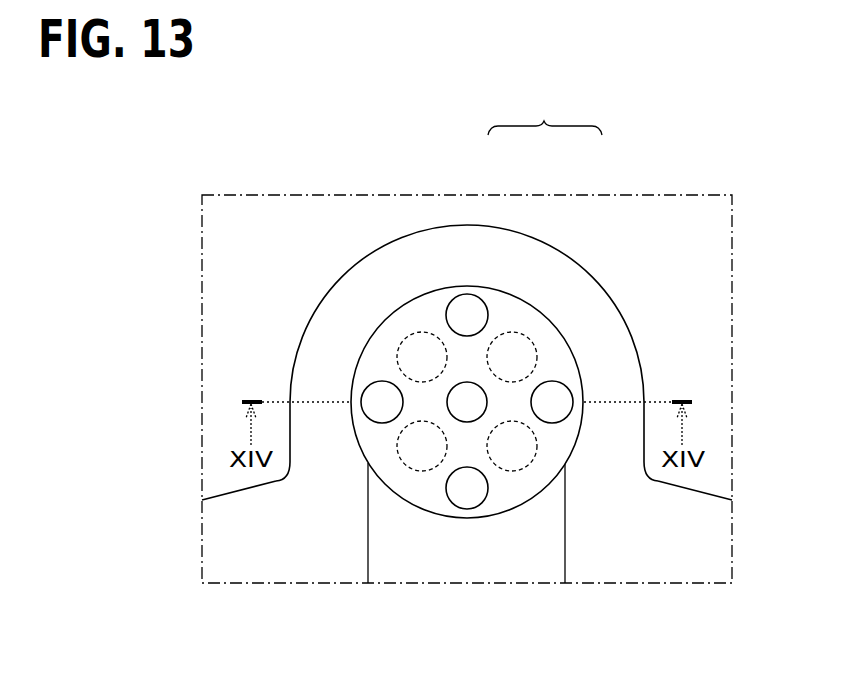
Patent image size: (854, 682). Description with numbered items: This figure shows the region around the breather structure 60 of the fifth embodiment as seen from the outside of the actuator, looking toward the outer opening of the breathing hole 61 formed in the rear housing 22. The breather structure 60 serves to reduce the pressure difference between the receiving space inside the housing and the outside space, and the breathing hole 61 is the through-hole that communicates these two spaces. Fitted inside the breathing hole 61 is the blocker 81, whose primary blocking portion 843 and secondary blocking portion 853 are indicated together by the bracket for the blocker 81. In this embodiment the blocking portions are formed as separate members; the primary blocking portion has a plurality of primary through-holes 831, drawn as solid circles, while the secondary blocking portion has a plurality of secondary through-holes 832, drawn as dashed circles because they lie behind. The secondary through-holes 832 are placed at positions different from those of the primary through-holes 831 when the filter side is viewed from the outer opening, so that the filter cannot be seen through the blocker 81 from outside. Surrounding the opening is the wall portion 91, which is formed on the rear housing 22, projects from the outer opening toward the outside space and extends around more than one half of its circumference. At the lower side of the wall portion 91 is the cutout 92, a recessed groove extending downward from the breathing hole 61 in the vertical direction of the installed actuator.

The rear housing 22 is at (283, 281).
The breather structure 60 is at (461, 227).
The breathing hole 61 is at (368, 363).
The blocker 81 is at (545, 115).
The primary blocking portion 843 is at (493, 298).
The secondary blocking portion 853 is at (528, 320).
The wall portion 91 is at (342, 290).
The cutout 92 is at (368, 562).
The primary through-holes 831 is at (475, 308).
The secondary through-holes 832 is at (425, 350).